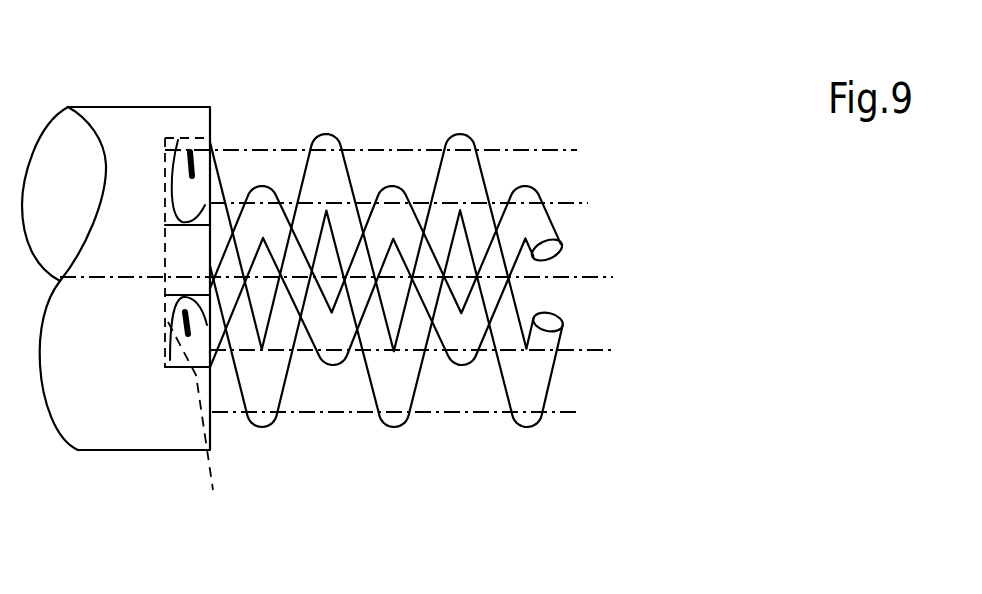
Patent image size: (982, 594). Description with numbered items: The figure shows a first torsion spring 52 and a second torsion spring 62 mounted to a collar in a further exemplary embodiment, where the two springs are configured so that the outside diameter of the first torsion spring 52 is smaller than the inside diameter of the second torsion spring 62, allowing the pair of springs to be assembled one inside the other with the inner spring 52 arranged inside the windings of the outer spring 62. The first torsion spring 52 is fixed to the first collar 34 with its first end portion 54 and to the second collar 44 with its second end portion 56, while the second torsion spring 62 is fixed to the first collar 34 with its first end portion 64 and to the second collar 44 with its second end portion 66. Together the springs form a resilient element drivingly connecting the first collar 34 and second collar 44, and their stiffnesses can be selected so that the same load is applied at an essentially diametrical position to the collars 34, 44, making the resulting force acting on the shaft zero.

The first collar 34 is at (116, 245).
The second collar 44 is at (137, 135).
The first end portion 64 is at (223, 181).
The second end portion 66 is at (166, 215).
The first end portion 54 is at (230, 431).
The second end portion 56 is at (190, 406).
The first torsion spring 52 is at (391, 186).
The second torsion spring 62 is at (460, 134).